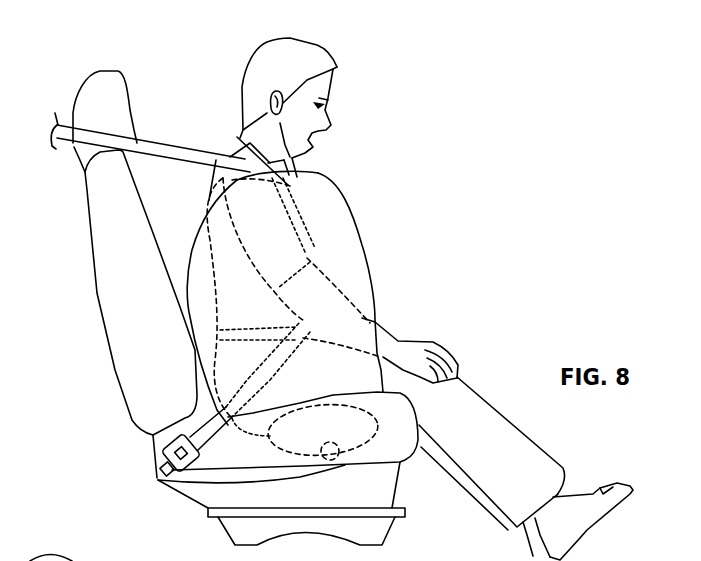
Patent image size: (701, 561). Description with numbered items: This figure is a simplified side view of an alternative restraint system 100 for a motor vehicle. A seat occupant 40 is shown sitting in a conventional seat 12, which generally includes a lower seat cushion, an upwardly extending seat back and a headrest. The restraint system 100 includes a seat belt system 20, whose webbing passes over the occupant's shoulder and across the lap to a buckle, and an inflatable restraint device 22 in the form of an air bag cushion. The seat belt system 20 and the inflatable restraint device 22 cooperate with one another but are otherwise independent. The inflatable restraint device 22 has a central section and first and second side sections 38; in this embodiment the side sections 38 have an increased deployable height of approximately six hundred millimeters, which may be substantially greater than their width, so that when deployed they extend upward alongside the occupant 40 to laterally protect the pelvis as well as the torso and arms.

The restraint system 100 is at (423, 64).
The seat 12 is at (94, 297).
The seat belt system 20 is at (176, 139).
The inflatable restraint device 22 is at (364, 223).
The side section 38 is at (374, 277).
The seat occupant 40 is at (295, 40).